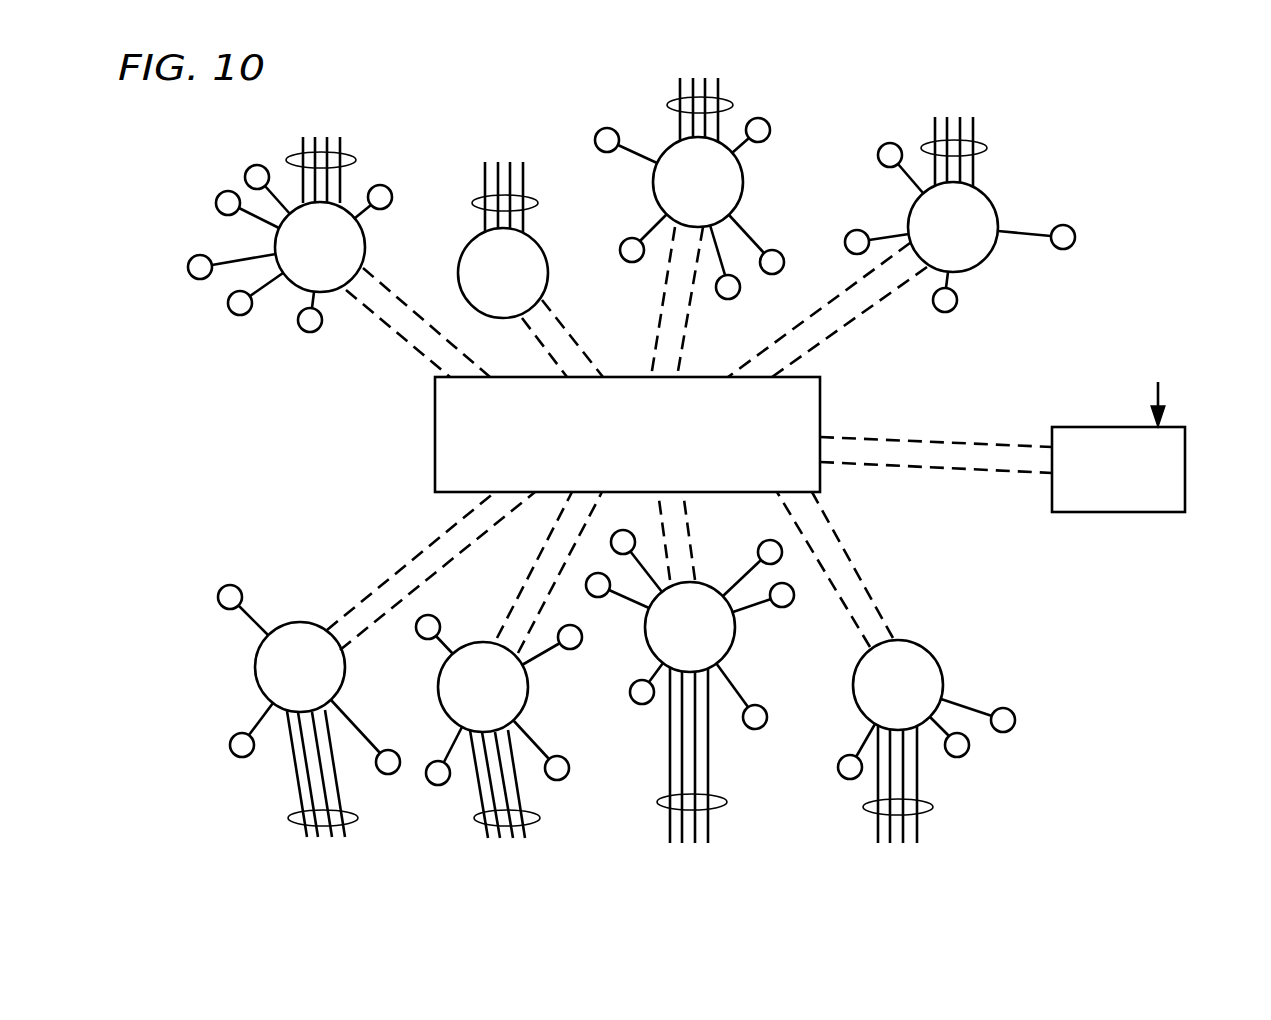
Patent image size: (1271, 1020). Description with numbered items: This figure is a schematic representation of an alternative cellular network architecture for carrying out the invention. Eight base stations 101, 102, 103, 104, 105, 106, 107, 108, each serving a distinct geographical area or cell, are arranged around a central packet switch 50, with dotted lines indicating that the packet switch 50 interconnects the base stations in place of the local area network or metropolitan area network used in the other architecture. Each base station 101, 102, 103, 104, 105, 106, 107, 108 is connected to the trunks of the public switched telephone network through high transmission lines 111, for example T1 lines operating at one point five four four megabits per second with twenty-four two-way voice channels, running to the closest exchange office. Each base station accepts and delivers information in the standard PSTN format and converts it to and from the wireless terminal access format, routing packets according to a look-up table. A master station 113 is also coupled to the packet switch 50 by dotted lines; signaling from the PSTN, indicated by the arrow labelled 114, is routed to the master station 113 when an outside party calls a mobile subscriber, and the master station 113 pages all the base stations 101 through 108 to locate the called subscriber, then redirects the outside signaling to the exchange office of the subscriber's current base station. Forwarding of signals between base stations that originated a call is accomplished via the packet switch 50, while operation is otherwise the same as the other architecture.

The packet switch 50 is at (435, 433).
The base station 101 is at (352, 233).
The base station 102 is at (543, 250).
The base station 103 is at (737, 172).
The base station 104 is at (989, 213).
The base station 105 is at (864, 713).
The base station 106 is at (706, 584).
The base station 107 is at (517, 705).
The base station 108 is at (258, 670).
The high transmission lines 111 is at (356, 160).
The master station 113 is at (1185, 468).
The signaling from PSTN 114 is at (1156, 400).